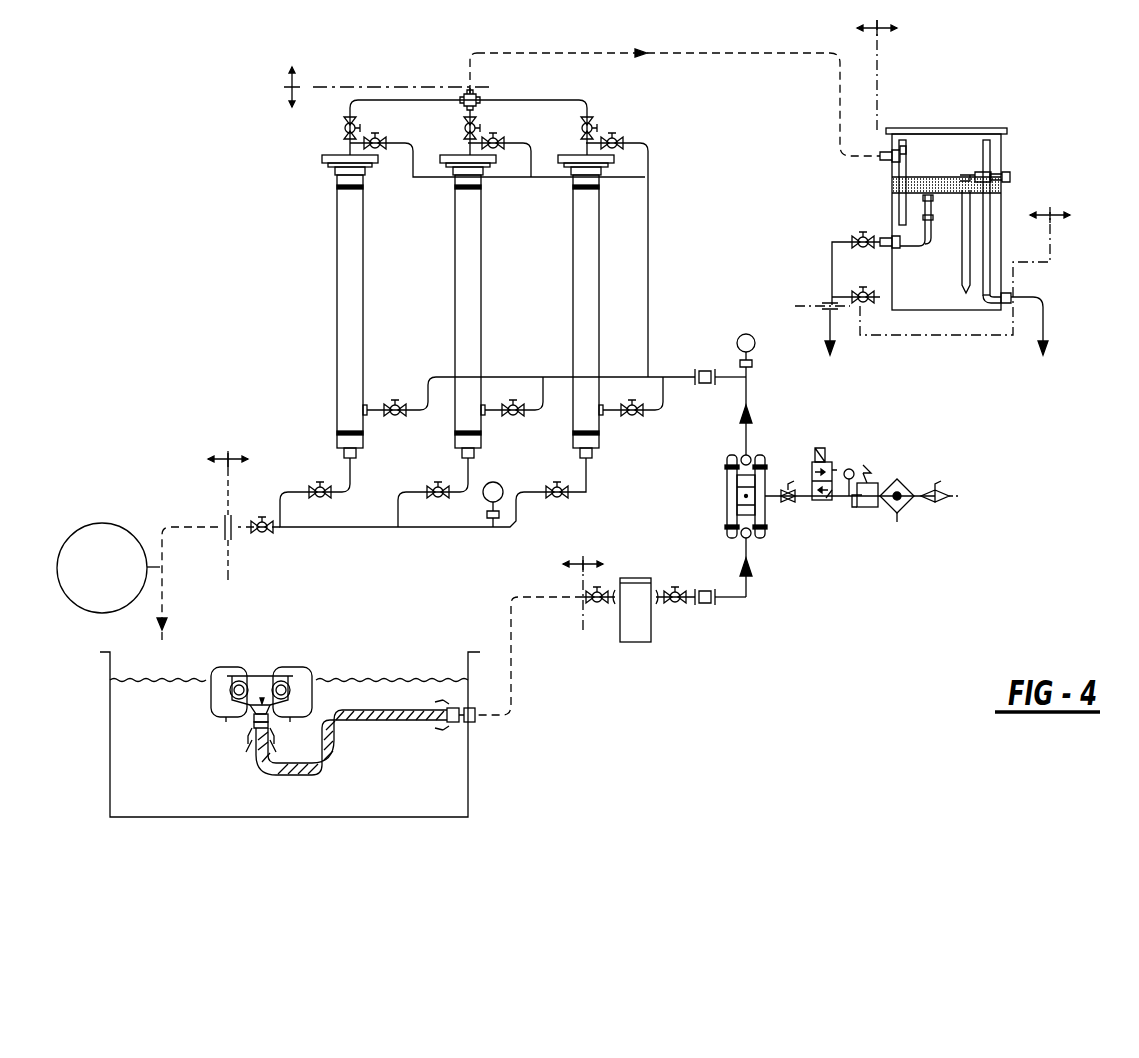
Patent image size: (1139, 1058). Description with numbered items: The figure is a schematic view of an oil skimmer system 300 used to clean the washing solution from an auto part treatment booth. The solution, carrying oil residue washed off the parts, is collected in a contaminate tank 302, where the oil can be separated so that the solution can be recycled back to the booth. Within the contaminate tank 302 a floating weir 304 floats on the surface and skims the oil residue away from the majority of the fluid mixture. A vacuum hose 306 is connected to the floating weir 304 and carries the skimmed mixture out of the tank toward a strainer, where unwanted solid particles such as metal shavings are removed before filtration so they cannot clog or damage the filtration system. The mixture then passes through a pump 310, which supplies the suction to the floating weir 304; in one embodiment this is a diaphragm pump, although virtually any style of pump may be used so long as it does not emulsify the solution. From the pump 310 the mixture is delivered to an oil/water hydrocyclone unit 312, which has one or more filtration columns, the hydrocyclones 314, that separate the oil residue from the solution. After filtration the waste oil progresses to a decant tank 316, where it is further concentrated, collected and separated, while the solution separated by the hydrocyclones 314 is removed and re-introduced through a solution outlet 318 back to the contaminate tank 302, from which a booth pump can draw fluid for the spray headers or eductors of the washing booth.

The oil skimmer system 300 is at (197, 246).
The contaminate tank 302 is at (110, 726).
The floating weir 304 is at (302, 667).
The vacuum hose 306 is at (327, 764).
The pump 310 is at (767, 528).
The oil/water hydrocyclone unit 312 is at (690, 195).
The hydrocyclones 314 is at (337, 332).
The decant tank 316 is at (966, 128).
The solution outlet 318 is at (113, 522).